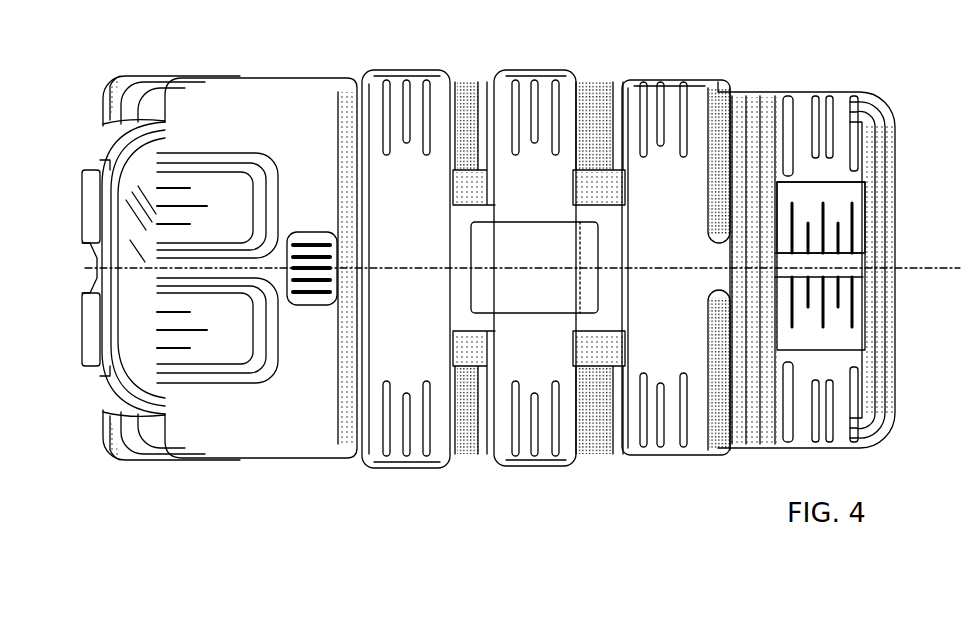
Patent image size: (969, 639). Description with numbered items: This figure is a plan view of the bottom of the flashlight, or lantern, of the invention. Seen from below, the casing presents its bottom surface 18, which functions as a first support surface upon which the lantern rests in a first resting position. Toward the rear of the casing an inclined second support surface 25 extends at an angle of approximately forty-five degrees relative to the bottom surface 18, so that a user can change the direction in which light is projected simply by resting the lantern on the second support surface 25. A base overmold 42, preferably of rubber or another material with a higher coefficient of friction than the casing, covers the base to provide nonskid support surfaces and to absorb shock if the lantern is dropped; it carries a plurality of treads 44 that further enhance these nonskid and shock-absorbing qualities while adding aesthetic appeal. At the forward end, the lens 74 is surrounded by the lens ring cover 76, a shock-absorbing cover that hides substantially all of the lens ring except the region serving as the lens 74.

The bottom surface 18 is at (672, 180).
The inclined second support surface 25 is at (838, 190).
The base overmold 42 is at (831, 95).
The treads 44 is at (485, 100).
The lens 74 is at (130, 268).
The lens ring cover 76 is at (267, 97).